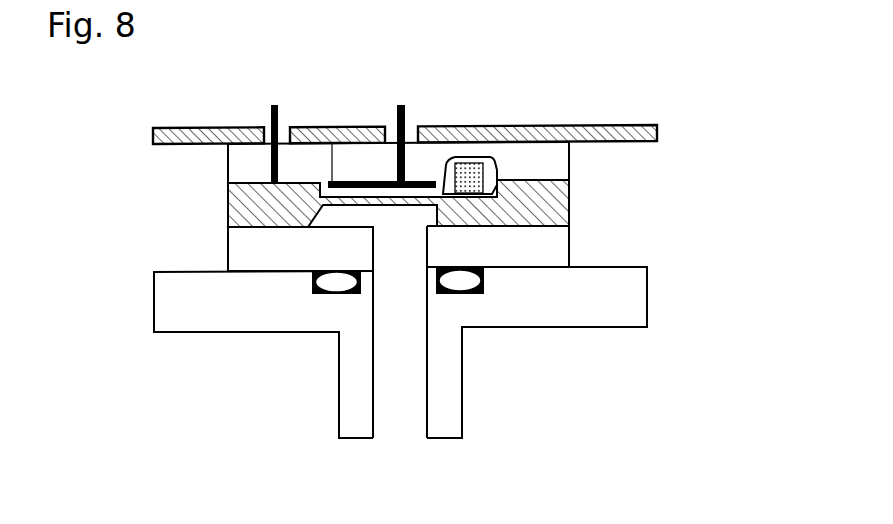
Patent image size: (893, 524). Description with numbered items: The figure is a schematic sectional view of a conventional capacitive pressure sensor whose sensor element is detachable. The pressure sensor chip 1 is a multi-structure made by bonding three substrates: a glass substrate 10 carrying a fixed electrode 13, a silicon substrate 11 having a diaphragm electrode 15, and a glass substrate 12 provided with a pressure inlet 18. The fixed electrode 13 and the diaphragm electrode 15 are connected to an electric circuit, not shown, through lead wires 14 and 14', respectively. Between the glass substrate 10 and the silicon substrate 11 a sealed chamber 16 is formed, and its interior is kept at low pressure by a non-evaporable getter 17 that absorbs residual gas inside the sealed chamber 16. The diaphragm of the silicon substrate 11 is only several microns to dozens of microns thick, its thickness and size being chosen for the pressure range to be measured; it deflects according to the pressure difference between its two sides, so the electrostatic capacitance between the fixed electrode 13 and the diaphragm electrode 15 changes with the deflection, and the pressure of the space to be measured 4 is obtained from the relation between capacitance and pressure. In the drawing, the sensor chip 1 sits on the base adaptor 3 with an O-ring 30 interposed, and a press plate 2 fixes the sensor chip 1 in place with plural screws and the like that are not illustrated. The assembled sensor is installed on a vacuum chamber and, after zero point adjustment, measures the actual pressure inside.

The pressure sensor chip 1 is at (733, 165).
The press plate 2 is at (657, 125).
The base adaptor 3 is at (635, 310).
The space to be measured 4 is at (403, 430).
The glass substrate 10 is at (557, 162).
The silicon substrate 11 is at (563, 200).
The glass substrate 12 is at (560, 243).
The fixed electrode 13 is at (332, 181).
The lead wire 14 is at (456, 111).
The lead wire 14' is at (324, 104).
The diaphragm electrode 15 is at (340, 206).
The sealed chamber 16 is at (478, 180).
The non-evaporable getter 17 is at (455, 158).
The pressure inlet 18 is at (393, 252).
The O-ring 30 is at (460, 280).